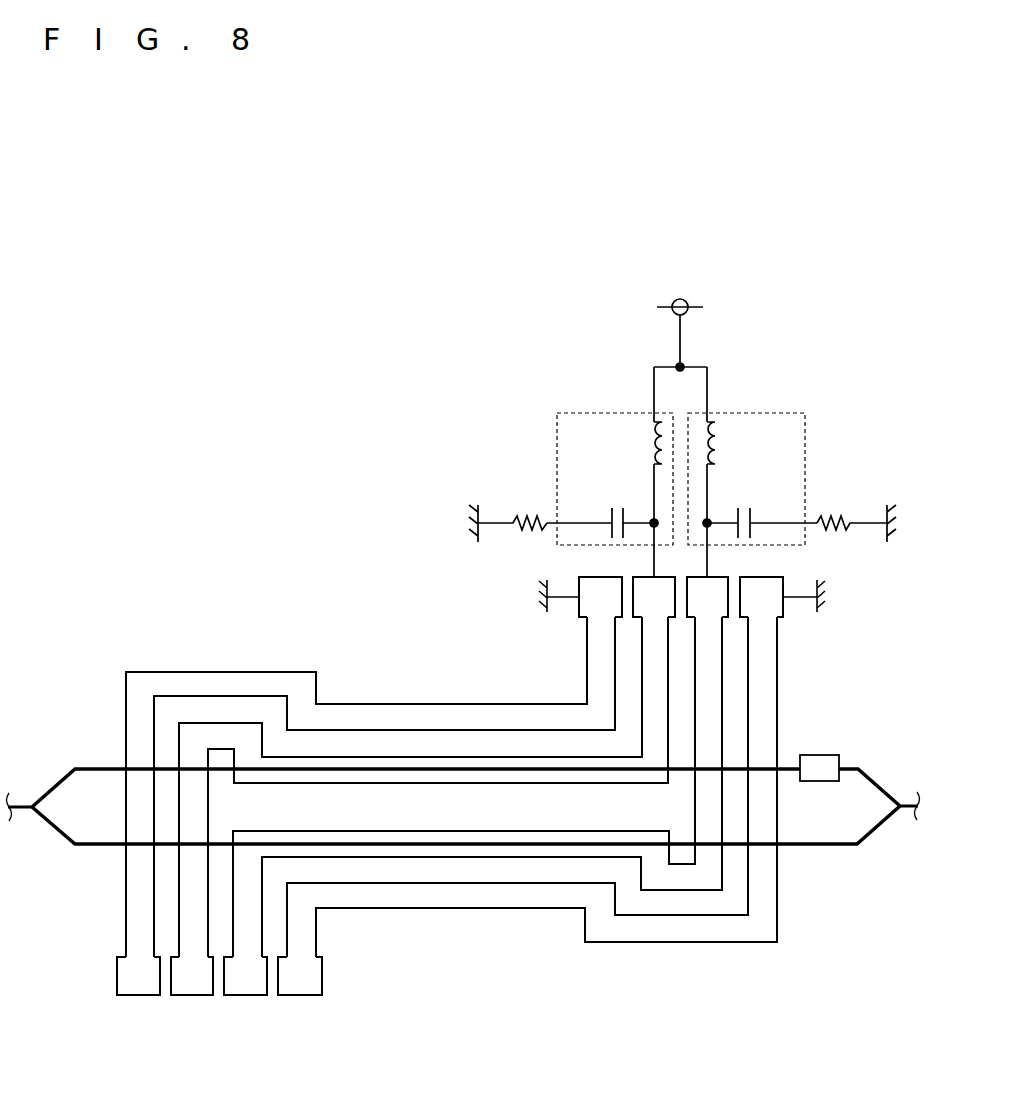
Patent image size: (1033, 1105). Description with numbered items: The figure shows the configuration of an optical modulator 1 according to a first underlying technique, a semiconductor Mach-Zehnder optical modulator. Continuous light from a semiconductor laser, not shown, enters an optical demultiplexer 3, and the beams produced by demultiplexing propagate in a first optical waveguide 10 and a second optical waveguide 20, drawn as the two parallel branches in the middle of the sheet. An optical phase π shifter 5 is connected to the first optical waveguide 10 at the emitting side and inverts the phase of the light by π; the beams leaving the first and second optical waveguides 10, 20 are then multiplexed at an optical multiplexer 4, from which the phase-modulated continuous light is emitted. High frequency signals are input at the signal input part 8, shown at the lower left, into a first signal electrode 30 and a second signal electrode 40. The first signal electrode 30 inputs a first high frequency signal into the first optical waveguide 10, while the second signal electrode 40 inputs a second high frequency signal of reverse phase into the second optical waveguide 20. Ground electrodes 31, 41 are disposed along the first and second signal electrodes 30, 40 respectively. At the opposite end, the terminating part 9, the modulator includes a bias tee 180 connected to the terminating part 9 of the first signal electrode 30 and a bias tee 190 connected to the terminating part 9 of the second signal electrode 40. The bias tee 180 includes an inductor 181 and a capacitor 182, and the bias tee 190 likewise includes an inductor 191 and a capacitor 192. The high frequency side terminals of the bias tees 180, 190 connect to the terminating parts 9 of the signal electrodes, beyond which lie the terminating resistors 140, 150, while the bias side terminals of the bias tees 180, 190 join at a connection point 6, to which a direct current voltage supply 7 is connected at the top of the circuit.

The optical modulator 1 is at (211, 519).
The optical demultiplexer 3 is at (31, 812).
The optical multiplexer 4 is at (901, 810).
The optical phase π shifter 5 is at (818, 755).
The connection point 6 is at (683, 365).
The direct current voltage supply 7 is at (682, 299).
The signal input part 8 is at (333, 957).
The terminating part 9 is at (833, 577).
The first optical waveguide 10 is at (92, 767).
The second optical waveguide 20 is at (93, 846).
The first signal electrode 30 is at (195, 995).
The ground electrode 31 is at (141, 995).
The second signal electrode 40 is at (249, 995).
The ground electrode 41 is at (302, 995).
The terminating resistor 140 is at (529, 512).
The terminating resistor 150 is at (835, 512).
The bias tee 180 is at (595, 413).
The inductor 181 is at (647, 441).
The capacitor 182 is at (614, 508).
The bias tee 190 is at (769, 413).
The inductor 191 is at (717, 441).
The capacitor 192 is at (749, 508).